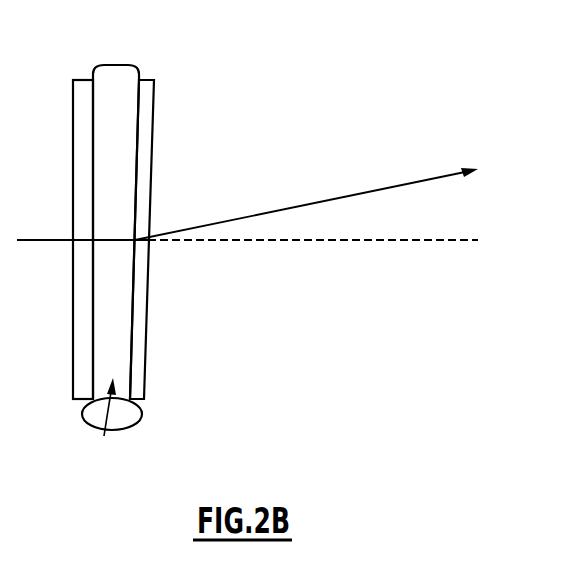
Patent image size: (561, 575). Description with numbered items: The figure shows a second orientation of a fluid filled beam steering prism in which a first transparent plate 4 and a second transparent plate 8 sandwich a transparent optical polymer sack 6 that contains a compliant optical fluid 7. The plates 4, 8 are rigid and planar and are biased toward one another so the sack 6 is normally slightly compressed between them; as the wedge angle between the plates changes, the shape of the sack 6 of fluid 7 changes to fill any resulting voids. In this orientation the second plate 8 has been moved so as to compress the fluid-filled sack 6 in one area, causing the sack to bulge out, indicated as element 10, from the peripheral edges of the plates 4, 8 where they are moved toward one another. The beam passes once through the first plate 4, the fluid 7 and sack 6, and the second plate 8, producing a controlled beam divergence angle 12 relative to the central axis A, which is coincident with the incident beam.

The first transparent plate 4 is at (86, 91).
The transparent optical polymer sack 6 is at (124, 58).
The compliant optical fluid 7 is at (106, 437).
The second transparent plate 8 is at (153, 105).
The bulge of the sack 10 is at (128, 428).
The beam divergence angle 12 is at (445, 212).
The central axis A is at (423, 241).